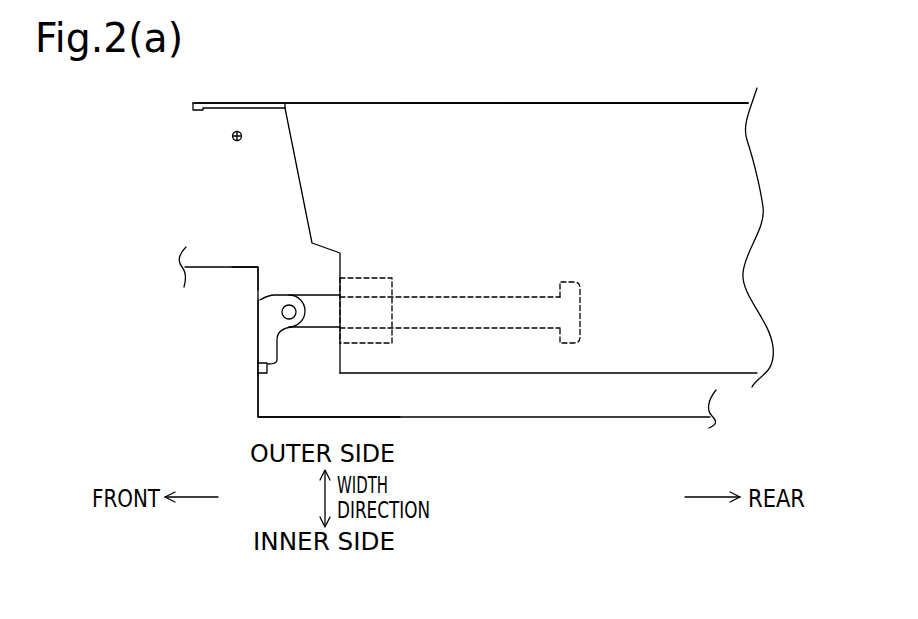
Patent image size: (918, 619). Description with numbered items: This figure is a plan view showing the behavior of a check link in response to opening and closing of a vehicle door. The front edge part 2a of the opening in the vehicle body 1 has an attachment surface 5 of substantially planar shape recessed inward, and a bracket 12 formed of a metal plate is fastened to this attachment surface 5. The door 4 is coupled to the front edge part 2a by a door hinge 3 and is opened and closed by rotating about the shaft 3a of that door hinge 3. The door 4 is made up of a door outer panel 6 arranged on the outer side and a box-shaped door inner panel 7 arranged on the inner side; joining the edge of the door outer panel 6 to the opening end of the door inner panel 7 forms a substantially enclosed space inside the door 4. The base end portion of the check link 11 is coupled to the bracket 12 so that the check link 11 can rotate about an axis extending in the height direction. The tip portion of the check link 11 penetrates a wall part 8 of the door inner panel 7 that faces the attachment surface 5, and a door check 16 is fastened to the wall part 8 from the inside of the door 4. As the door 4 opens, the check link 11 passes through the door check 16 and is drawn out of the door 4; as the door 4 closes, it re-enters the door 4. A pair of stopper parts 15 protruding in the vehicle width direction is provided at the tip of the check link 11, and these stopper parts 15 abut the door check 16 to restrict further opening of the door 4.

The body 1 is at (222, 258).
The front edge part 2a is at (243, 287).
The door hinge 3 is at (470, 85).
The shaft 3a is at (237, 131).
The door 4 is at (503, 101).
The attachment surface 5 is at (270, 393).
The door outer panel 6 is at (625, 103).
The door inner panel 7 is at (616, 373).
The wall part 8 is at (340, 333).
The check link 11 is at (525, 297).
The bracket 12 is at (272, 340).
The stopper part 15 is at (572, 282).
The door check 16 is at (372, 278).